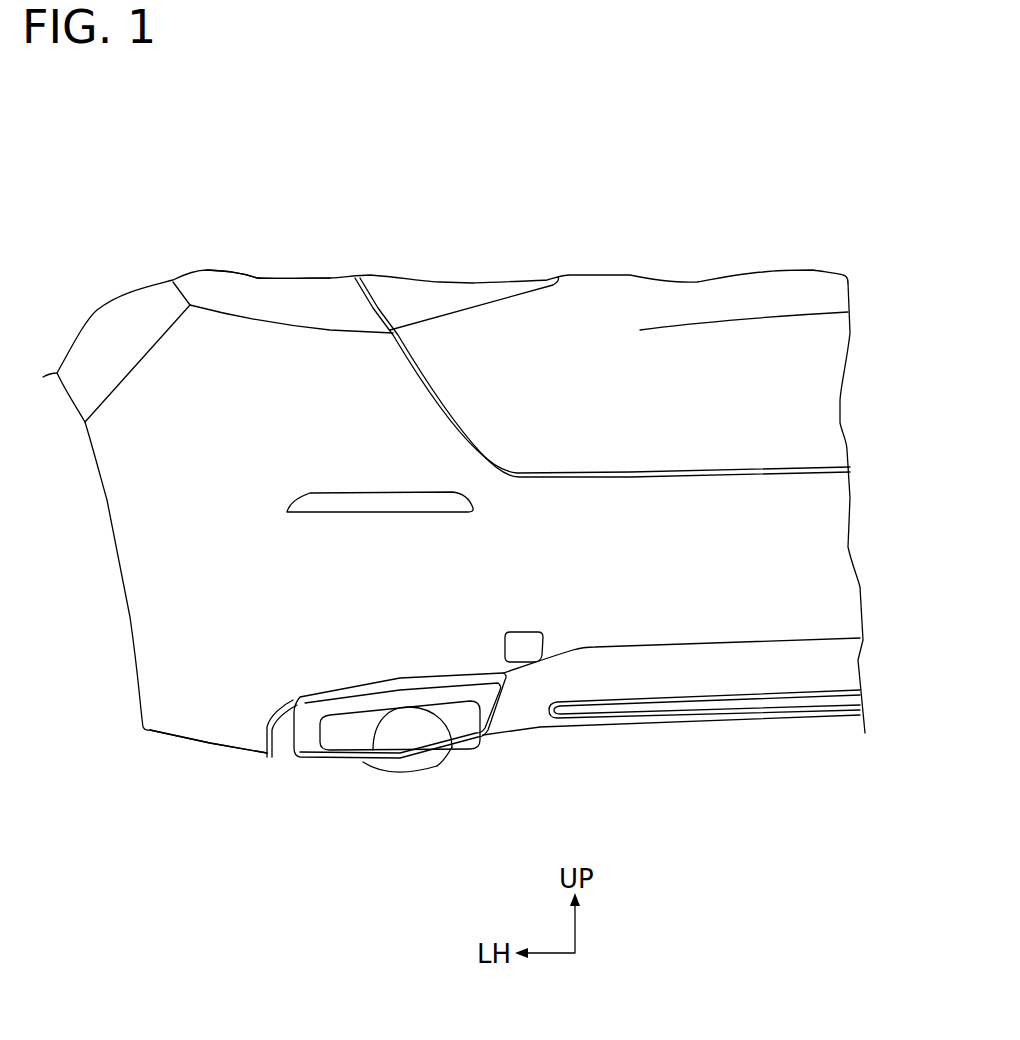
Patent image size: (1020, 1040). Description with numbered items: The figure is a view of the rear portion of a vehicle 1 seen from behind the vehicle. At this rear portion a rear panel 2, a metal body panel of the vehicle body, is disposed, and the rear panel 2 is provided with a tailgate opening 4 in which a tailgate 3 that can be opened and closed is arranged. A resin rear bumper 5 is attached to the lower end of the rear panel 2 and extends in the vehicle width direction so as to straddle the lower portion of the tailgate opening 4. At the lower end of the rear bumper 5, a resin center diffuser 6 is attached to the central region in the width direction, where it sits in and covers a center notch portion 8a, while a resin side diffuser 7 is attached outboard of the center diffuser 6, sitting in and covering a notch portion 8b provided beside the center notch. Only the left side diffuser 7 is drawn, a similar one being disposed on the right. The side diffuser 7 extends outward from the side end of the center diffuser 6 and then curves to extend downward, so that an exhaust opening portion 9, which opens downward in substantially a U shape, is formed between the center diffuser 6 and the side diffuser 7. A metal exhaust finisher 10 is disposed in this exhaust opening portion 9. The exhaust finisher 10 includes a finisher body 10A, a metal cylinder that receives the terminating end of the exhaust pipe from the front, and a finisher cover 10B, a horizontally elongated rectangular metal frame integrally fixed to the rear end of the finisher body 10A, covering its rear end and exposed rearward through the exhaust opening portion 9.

The vehicle 1 is at (549, 207).
The rear panel 2 is at (247, 273).
The tailgate 3 is at (817, 430).
The tailgate opening 4 is at (373, 305).
The rear bumper 5 is at (207, 752).
The center diffuser 6 is at (782, 680).
The side diffuser 7 is at (287, 753).
The center notch portion 8a is at (803, 642).
The notch portion 8b is at (295, 705).
The exhaust opening portion 9 is at (485, 730).
The exhaust finisher 10 is at (397, 780).
The finisher body 10A is at (418, 773).
The finisher cover 10B is at (433, 770).